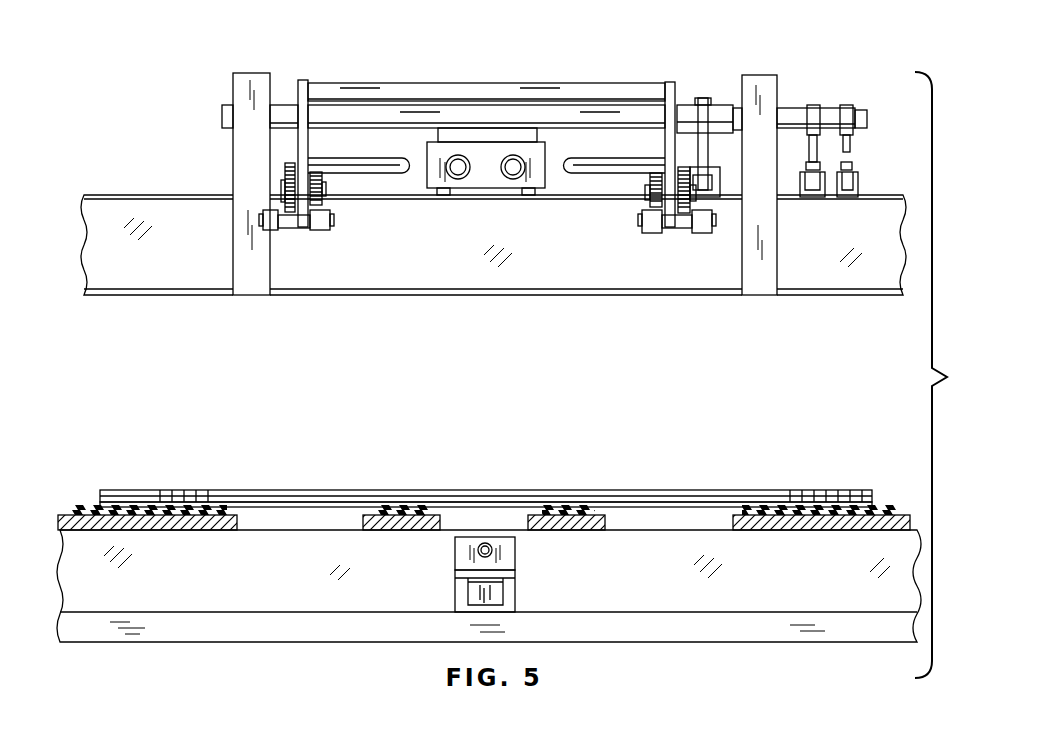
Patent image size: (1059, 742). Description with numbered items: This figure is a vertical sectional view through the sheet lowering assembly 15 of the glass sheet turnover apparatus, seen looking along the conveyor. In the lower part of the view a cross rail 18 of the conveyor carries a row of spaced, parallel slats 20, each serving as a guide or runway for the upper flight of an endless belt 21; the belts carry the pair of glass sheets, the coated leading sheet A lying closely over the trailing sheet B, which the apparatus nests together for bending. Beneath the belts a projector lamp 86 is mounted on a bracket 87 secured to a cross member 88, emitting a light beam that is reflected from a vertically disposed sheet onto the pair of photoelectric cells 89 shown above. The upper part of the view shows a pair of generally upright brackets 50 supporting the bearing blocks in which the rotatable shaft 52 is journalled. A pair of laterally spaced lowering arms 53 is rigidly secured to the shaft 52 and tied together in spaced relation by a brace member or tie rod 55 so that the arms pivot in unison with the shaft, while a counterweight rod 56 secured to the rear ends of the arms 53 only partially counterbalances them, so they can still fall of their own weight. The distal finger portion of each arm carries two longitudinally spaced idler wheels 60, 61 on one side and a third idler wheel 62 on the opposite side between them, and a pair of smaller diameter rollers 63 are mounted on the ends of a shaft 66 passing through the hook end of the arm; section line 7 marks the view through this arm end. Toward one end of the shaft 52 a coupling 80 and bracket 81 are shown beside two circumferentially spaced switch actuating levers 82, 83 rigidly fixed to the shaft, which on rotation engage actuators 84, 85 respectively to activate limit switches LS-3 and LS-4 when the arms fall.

The sheet lowering assembly 15 is at (190, 104).
The cross rail 18 is at (205, 600).
The slat 20 is at (157, 530).
The endless belt 21 is at (82, 505).
The upright bracket 50 is at (245, 80).
The rotatable shaft 52 is at (567, 118).
The lowering arm 53 is at (302, 85).
The brace member or tie rod 55 is at (575, 176).
The counterweight rod 56 is at (430, 95).
The idler wheel 60 is at (290, 166).
The idler wheel 61 is at (285, 188).
The third idler wheel 62 is at (326, 186).
The roller 63 is at (273, 232).
The roller shaft 66 is at (334, 220).
The coupling 80 is at (708, 108).
The bracket 81 is at (690, 127).
The switch actuating lever 82 is at (818, 122).
The switch actuating lever 83 is at (852, 135).
The actuator 84 is at (805, 170).
The actuator 85 is at (854, 163).
The projector lamp 86 is at (508, 565).
The bracket 87 is at (462, 597).
The cross member 88 is at (265, 632).
The photoelectric cell 89 is at (505, 178).
The section line 7 is at (348, 143).
The leading sheet A is at (280, 490).
The trailing sheet B is at (308, 508).
The limit switch LS-3 is at (812, 198).
The limit switch LS-4 is at (842, 198).